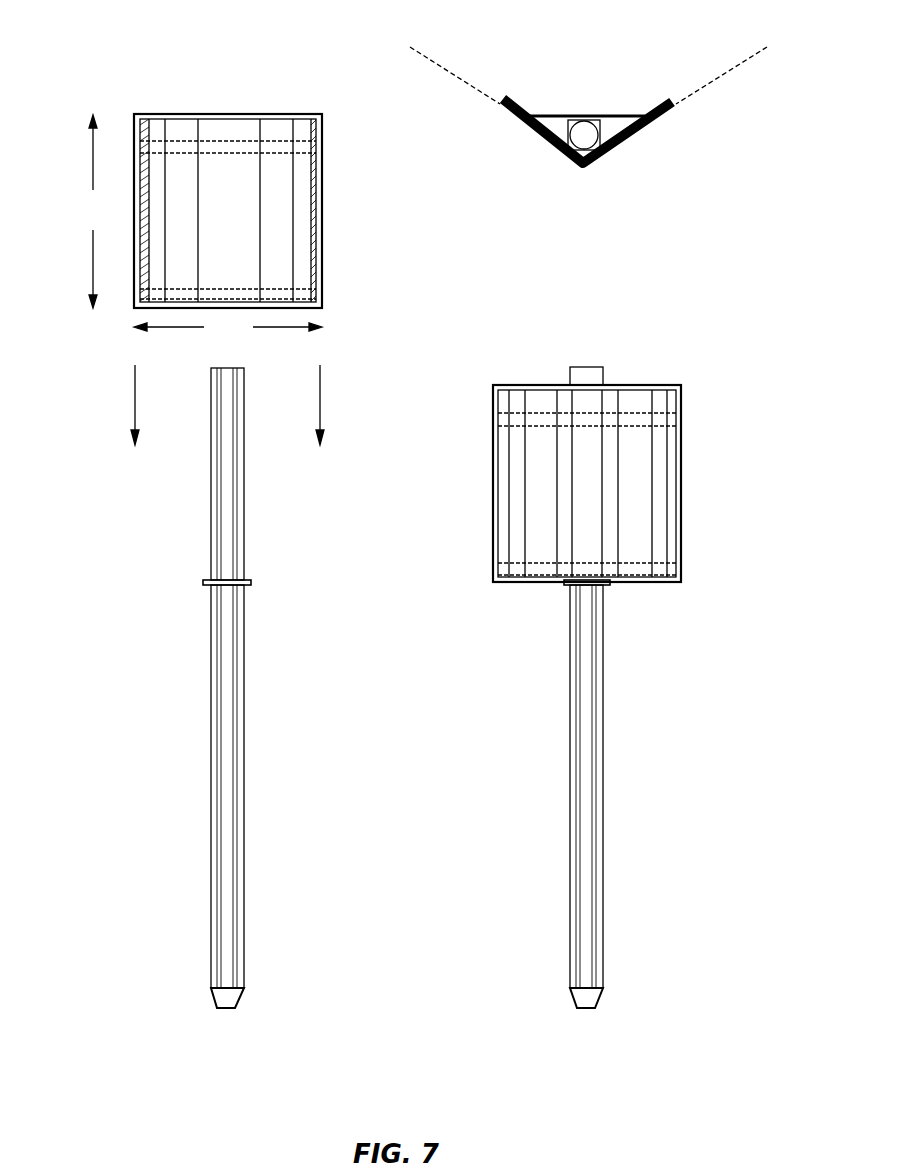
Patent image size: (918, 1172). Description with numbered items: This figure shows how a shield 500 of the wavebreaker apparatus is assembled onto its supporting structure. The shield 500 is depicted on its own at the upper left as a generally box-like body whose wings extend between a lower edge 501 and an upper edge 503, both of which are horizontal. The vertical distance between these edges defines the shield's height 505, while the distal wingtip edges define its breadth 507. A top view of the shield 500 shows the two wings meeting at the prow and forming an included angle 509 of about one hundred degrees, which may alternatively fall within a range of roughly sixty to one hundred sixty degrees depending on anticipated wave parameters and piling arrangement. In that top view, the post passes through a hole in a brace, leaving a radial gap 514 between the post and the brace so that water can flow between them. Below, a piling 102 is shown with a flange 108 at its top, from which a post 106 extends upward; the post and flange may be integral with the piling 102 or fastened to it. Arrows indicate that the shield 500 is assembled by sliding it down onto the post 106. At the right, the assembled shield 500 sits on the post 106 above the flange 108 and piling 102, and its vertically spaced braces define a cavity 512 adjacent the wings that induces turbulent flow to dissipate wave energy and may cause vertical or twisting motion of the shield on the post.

The shield 500 is at (299, 108).
The lower edge 501 is at (317, 310).
The upper edge 503 is at (151, 113).
The height 505 is at (95, 211).
The breadth 507 is at (228, 329).
The included angle 509 is at (452, 67).
The radial gap 514 is at (592, 152).
The cavity 512 is at (645, 478).
The post 106 is at (244, 495).
The flange 108 is at (252, 583).
The piling 102 is at (244, 665).